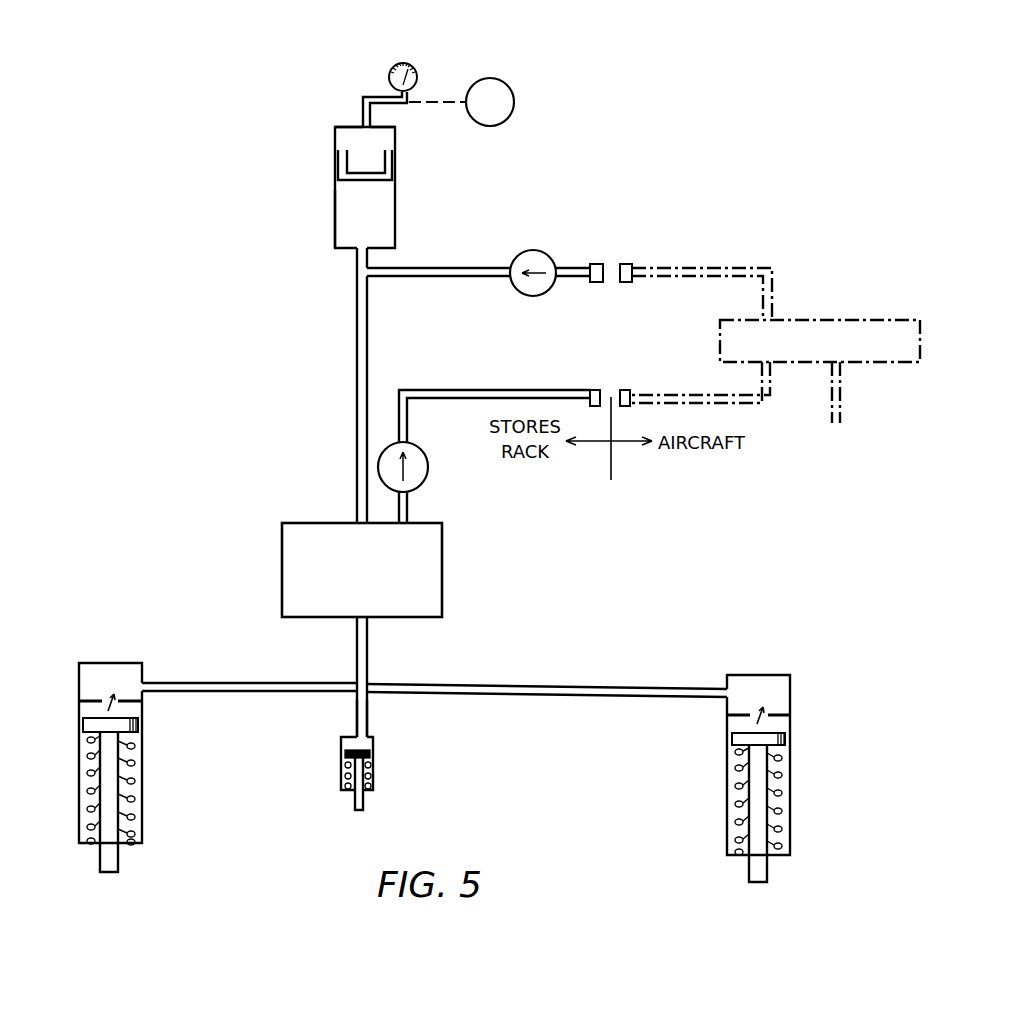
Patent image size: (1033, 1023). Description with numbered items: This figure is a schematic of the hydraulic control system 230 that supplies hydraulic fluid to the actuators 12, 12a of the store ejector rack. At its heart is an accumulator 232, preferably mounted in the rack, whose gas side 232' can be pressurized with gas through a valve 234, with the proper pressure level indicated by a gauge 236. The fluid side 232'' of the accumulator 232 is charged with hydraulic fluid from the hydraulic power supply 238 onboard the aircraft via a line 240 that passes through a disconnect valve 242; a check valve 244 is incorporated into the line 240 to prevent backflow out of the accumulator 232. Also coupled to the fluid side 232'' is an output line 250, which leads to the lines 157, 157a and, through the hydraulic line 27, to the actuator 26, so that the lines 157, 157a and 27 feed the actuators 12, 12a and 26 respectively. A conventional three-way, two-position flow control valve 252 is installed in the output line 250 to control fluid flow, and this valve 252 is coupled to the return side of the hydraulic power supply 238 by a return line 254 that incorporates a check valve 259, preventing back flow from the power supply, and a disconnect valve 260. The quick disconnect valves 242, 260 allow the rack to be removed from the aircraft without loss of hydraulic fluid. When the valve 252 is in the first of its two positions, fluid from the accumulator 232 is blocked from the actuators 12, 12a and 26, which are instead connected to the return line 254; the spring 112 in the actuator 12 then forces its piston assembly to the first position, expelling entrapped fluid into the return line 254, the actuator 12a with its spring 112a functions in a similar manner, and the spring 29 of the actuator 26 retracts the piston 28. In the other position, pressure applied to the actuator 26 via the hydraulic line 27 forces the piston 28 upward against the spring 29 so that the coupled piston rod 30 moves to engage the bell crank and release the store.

The actuator 12 is at (118, 663).
The actuator 12a is at (758, 675).
The actuator 26 is at (373, 738).
The hydraulic line 27 is at (350, 713).
The piston 28 is at (345, 755).
The spring 29 is at (371, 770).
The piston rod 30 is at (368, 783).
The spring 112 is at (132, 775).
The spring 112a is at (775, 783).
The line 157 is at (230, 683).
The line 157a is at (498, 683).
The hydraulic control system 230 is at (657, 151).
The accumulator 232 is at (394, 187).
The gas side of accumulator 232' is at (327, 122).
The fluid side of accumulator 232'' is at (299, 219).
The valve 234 is at (500, 80).
The gauge 236 is at (412, 67).
The hydraulic power supply 238 is at (806, 320).
The line 240 is at (420, 266).
The disconnect valve 242 is at (602, 264).
The check valve 244 is at (537, 250).
The output line 250 is at (357, 362).
The three-way, two-position flow control valve 252 is at (442, 562).
The return line 254 is at (482, 390).
The check valve 259 is at (427, 477).
The disconnect valve 260 is at (598, 390).